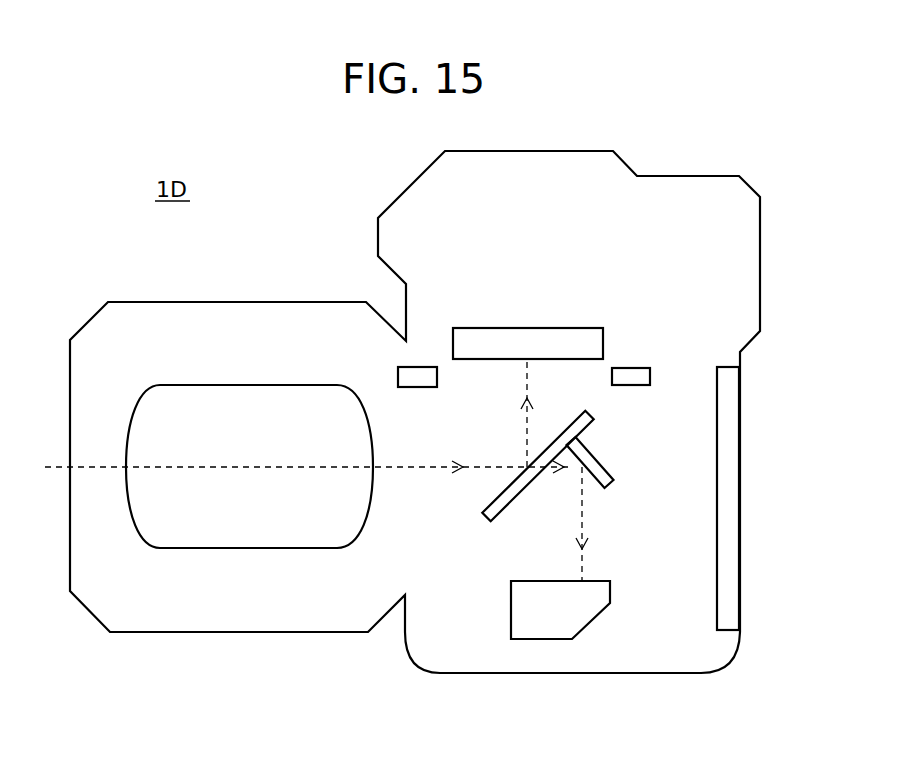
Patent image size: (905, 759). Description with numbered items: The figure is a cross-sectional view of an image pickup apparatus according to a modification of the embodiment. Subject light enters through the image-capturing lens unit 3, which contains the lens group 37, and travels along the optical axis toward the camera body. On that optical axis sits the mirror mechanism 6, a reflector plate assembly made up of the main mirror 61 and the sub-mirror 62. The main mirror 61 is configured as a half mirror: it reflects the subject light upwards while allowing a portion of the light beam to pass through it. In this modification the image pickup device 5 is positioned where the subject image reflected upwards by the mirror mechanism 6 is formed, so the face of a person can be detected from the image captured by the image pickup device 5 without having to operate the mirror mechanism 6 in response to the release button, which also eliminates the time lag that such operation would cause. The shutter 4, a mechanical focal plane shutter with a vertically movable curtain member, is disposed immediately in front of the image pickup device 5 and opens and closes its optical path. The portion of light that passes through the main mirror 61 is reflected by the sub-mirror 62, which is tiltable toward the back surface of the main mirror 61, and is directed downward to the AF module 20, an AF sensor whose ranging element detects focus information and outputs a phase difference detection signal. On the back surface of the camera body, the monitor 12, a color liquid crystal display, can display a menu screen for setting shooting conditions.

The image-capturing lens unit 3 is at (236, 636).
The lens group 37 is at (250, 385).
The image pickup device 5 is at (528, 328).
The shutter 4 is at (651, 378).
The monitor 12 is at (740, 497).
The main mirror 61 is at (493, 498).
The sub-mirror 62 is at (586, 452).
The mirror mechanism 6 is at (479, 535).
The AF module 20 is at (540, 640).